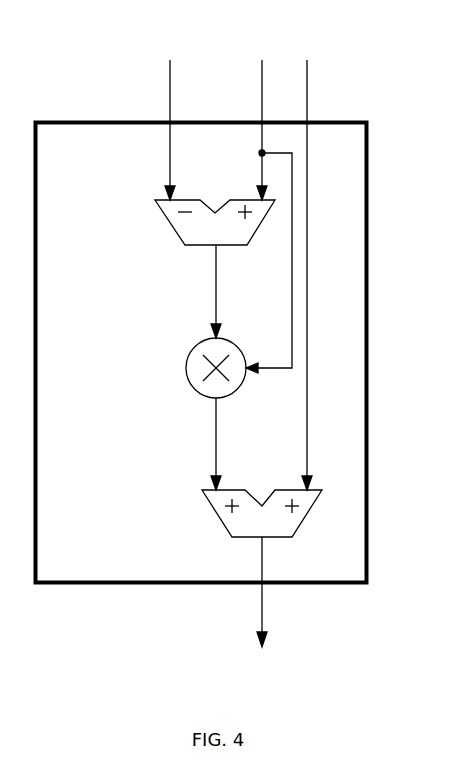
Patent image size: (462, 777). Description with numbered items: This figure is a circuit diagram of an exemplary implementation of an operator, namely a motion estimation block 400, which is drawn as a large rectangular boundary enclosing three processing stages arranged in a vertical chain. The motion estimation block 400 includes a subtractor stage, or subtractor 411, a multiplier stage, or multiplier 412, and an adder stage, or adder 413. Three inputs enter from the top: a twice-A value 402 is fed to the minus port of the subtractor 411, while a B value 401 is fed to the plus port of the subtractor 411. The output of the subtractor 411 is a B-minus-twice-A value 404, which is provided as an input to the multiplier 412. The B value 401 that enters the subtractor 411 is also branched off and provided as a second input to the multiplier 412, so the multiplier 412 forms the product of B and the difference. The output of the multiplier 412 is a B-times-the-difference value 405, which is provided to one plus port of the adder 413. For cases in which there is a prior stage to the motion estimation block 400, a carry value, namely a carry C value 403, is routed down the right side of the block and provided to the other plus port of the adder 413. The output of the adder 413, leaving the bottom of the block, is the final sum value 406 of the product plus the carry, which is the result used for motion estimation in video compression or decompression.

The motion estimation block 400 is at (368, 325).
The B value 401 is at (262, 77).
The 2A value 402 is at (170, 75).
The carry C value 403 is at (307, 92).
The B−2A value 404 is at (216, 283).
The B(B−2A) value 405 is at (216, 435).
The B(B−2A)+C value 406 is at (260, 620).
The subtractor stage 411 is at (165, 222).
The multiplier stage 412 is at (186, 372).
The adder stage 413 is at (214, 513).